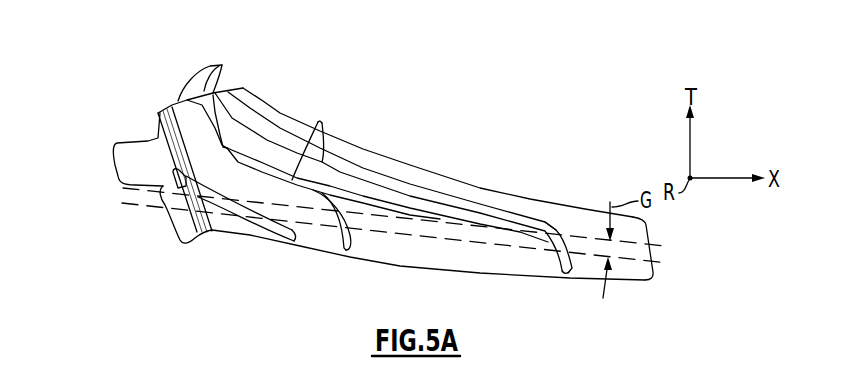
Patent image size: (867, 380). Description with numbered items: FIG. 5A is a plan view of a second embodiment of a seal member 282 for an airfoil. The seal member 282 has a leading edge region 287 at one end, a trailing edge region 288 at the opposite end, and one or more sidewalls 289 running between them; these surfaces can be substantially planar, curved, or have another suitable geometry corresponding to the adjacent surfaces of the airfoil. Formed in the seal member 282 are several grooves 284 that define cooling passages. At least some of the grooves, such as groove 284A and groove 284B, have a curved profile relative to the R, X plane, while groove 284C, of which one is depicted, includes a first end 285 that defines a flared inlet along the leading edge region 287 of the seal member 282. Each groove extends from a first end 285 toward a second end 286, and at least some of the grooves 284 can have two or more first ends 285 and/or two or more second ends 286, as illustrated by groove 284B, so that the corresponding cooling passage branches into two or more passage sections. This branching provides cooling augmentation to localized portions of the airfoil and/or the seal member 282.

The seal member 282 is at (128, 70).
The grooves 284 is at (319, 124).
The groove 284A is at (495, 211).
The groove 284B is at (405, 178).
The groove 284C is at (259, 232).
The first end 285 is at (221, 68).
The second end 286 is at (350, 250).
The leading edge region 287 is at (153, 130).
The trailing edge region 288 is at (652, 245).
The sidewall 289 is at (390, 167).